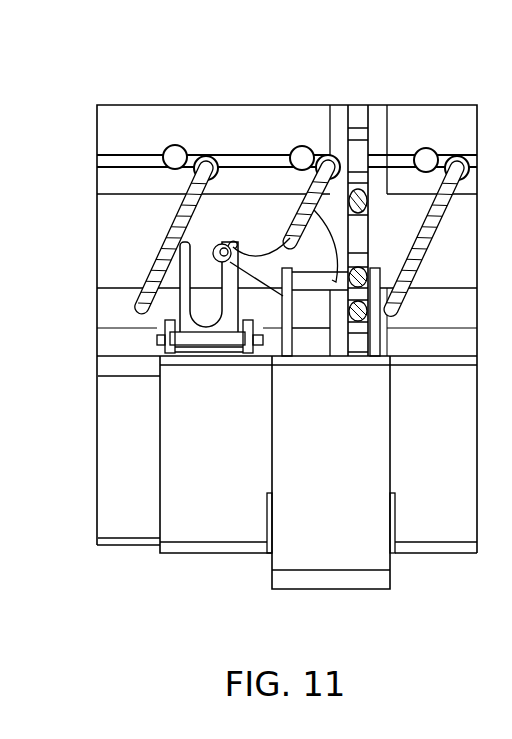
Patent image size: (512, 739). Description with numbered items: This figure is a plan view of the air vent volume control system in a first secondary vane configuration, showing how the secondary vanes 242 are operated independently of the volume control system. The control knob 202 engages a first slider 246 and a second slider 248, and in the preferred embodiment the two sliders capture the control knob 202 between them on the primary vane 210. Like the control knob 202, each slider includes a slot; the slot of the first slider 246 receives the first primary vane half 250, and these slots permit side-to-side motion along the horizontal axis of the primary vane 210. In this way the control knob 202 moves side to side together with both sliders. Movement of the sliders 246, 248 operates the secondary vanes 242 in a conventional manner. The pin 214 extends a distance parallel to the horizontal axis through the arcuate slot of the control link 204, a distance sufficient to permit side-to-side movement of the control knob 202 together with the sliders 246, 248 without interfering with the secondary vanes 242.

The control knob 202 is at (340, 553).
The control link 204 is at (358, 112).
The primary vane 210 is at (123, 528).
The pin 214 is at (305, 182).
The secondary vanes 242 is at (177, 156).
The first slider 246 is at (210, 528).
The second slider 248 is at (430, 532).
The first primary vane half 250 is at (98, 452).